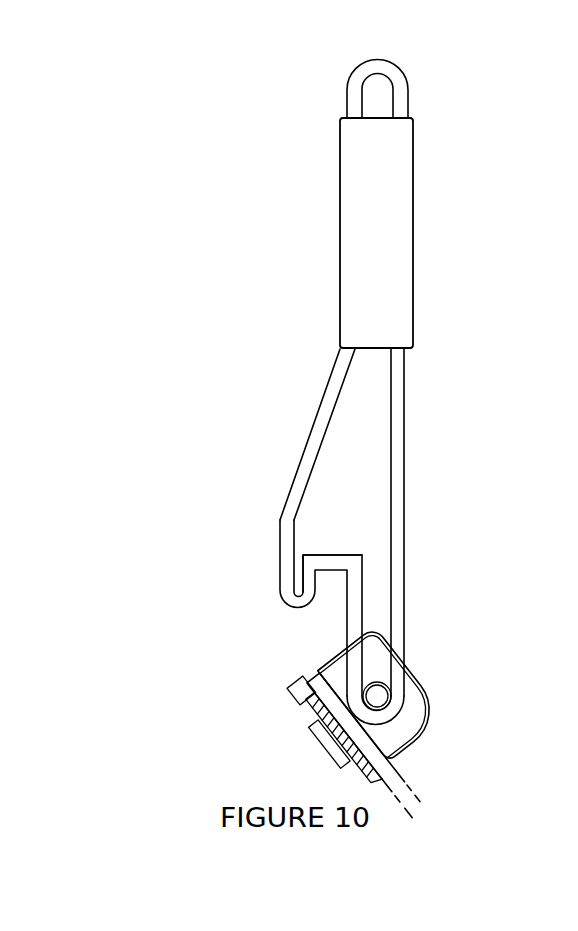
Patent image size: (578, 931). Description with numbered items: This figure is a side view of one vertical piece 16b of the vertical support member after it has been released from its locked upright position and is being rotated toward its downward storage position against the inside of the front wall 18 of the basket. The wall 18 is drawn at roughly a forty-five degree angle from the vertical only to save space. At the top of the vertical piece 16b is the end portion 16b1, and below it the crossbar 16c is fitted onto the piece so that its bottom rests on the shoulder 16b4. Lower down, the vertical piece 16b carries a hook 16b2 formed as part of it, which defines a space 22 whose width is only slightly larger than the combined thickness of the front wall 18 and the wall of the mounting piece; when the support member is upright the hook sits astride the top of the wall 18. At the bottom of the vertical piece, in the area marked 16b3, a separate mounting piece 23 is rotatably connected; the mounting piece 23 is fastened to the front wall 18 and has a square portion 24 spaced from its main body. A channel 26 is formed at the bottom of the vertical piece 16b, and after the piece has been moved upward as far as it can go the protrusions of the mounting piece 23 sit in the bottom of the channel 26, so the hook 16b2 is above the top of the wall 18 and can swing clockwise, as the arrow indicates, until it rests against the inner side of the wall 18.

The vertical piece 16b is at (118, 273).
The upper loop end of hook wire 16b1 is at (388, 64).
The crossbar 16c is at (396, 242).
The shoulder 16b4 is at (337, 350).
The hook 16b2 is at (279, 601).
The area at bottom of vertical piece 16b3 is at (414, 602).
The space 22 is at (329, 608).
The channel 26 is at (370, 672).
The square portion 24 is at (374, 686).
The mounting piece 23 is at (421, 700).
The front wall 18 is at (410, 786).